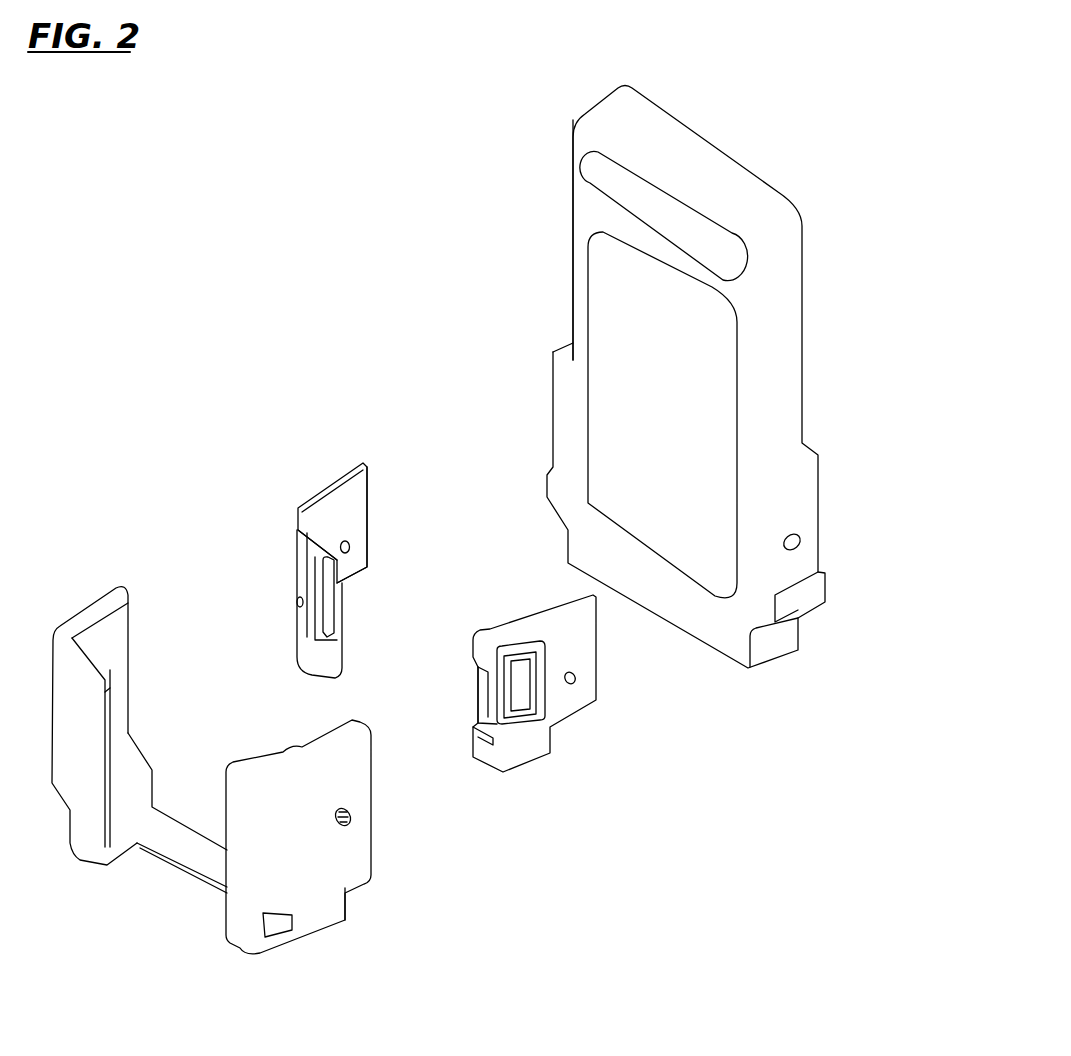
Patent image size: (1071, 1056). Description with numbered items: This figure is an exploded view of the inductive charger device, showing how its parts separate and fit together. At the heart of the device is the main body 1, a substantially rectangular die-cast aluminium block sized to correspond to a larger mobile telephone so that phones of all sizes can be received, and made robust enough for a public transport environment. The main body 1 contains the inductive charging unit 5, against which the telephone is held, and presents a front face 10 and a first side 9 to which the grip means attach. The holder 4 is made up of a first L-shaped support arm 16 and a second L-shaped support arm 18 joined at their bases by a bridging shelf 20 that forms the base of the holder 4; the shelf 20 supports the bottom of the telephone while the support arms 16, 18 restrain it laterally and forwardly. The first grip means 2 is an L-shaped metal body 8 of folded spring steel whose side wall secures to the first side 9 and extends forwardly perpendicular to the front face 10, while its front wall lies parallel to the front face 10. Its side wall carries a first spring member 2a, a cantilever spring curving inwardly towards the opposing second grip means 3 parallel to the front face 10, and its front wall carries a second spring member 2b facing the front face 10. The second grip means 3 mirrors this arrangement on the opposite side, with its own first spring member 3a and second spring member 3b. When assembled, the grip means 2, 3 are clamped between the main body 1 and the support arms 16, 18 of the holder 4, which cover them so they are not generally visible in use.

The main body 1 is at (573, 290).
The first grip means 2 is at (332, 488).
The first spring member 2a is at (323, 597).
The second spring member 2b is at (315, 520).
The second grip means 3 is at (585, 697).
The first spring member 3a is at (487, 712).
The second spring member 3b is at (527, 693).
The holder 4 is at (325, 852).
The inductive charging unit 5 is at (708, 406).
The L-shaped metal body 8 is at (352, 503).
The first side 9 is at (572, 140).
The front face 10 is at (778, 304).
The first L-shaped support arm 16 is at (88, 618).
The second L-shaped support arm 18 is at (348, 768).
The bridging shelf 20 is at (173, 840).